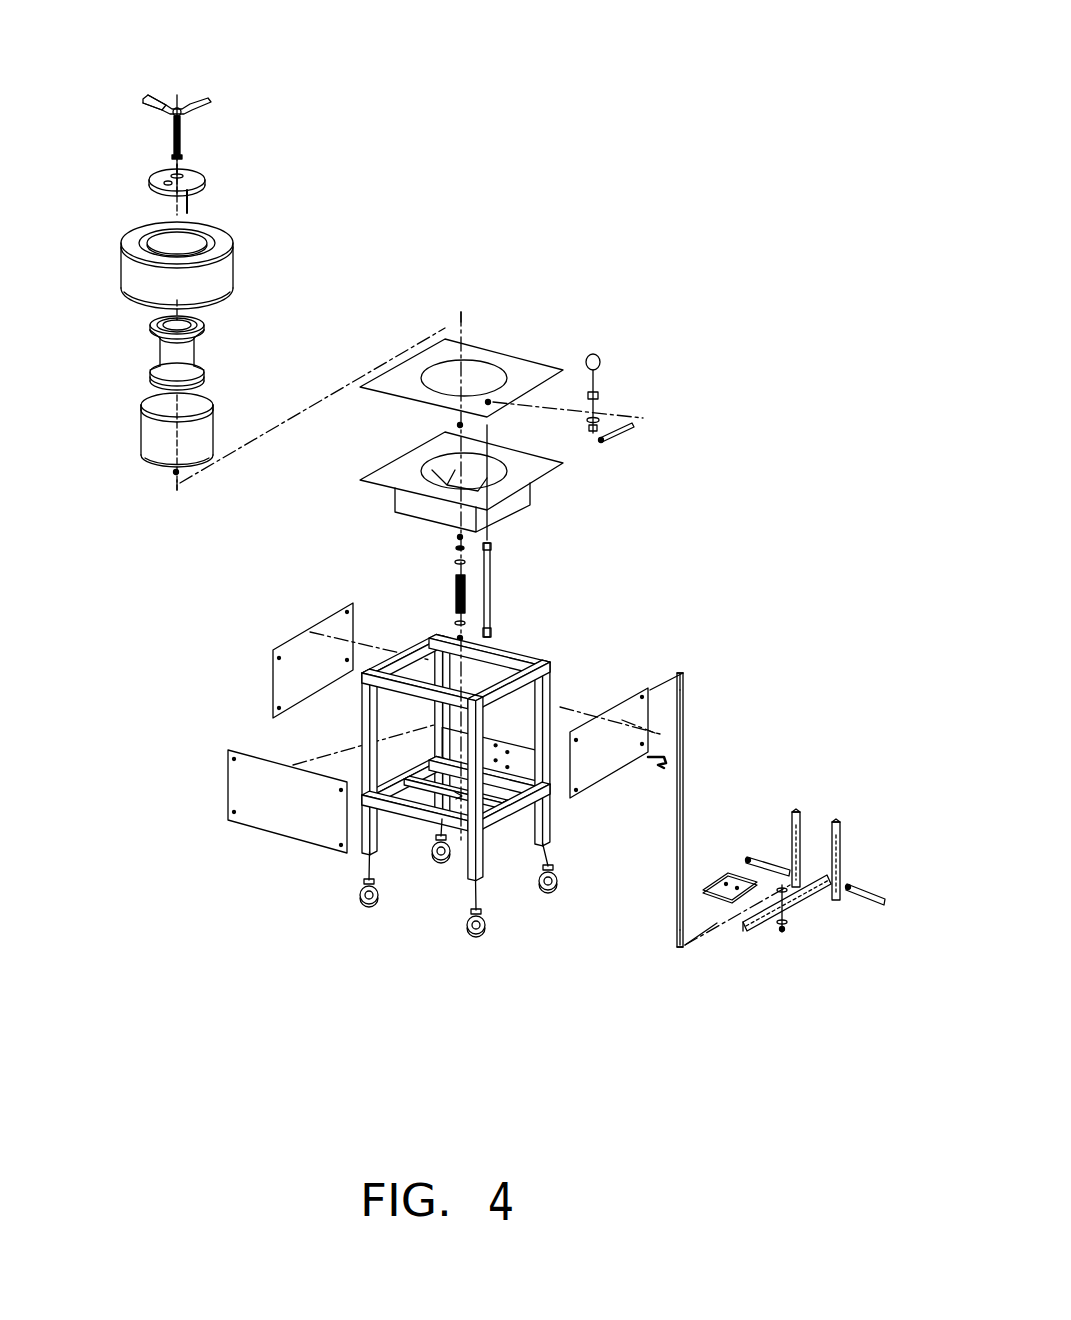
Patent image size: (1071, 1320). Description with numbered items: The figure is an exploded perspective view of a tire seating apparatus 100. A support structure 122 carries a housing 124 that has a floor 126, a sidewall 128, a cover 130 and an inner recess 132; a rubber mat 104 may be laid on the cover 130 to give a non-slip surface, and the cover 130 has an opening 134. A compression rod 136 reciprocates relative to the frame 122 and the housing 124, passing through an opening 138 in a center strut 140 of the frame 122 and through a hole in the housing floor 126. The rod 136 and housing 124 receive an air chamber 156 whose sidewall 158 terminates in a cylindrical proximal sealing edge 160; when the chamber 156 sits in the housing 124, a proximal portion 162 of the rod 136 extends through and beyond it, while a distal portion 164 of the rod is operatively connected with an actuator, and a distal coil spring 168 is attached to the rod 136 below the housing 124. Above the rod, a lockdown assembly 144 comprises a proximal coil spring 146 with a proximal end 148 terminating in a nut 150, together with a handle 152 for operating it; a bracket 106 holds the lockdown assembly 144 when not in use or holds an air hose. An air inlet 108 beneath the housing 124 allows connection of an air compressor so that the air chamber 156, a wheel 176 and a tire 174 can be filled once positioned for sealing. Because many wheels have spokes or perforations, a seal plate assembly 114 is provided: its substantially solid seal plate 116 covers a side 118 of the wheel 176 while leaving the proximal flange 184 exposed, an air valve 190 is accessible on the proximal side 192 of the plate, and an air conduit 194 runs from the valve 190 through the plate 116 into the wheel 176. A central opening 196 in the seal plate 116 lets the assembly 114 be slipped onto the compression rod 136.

The tire seating apparatus 100 is at (739, 535).
The rubber mat 104 is at (515, 370).
The bracket 106 is at (663, 762).
The air inlet 108 is at (490, 585).
The seal plate assembly 114 is at (255, 147).
The seal plate 116 is at (154, 178).
The side of the wheel 118 is at (157, 318).
The support structure 122 is at (587, 671).
The housing 124 is at (323, 468).
The floor 126 is at (440, 482).
The sidewall 128 is at (520, 498).
The cover 130 is at (520, 468).
The inner recess 132 is at (473, 470).
The opening 134 is at (447, 483).
The compression rod 136 is at (685, 817).
The opening 138 is at (460, 800).
The center strut 140 is at (512, 798).
The lockdown assembly 144 is at (209, 142).
The coil spring 146 is at (170, 129).
The proximal end 148 is at (146, 101).
The nut 150 is at (177, 106).
The handle 152 is at (152, 98).
The air chamber 156 is at (212, 422).
The sidewall 158 is at (160, 440).
The cylindrical proximal sealing edge 160 is at (140, 402).
The proximal portion 162 is at (683, 712).
The distal portion 164 is at (664, 921).
The coil spring 168 is at (455, 598).
The tire 174 is at (223, 272).
The wheel 176 is at (183, 355).
The proximal flange 184 is at (203, 320).
The air valve 190 is at (207, 177).
The proximal side 192 is at (192, 168).
The air conduit 194 is at (193, 202).
The central opening 196 is at (167, 187).